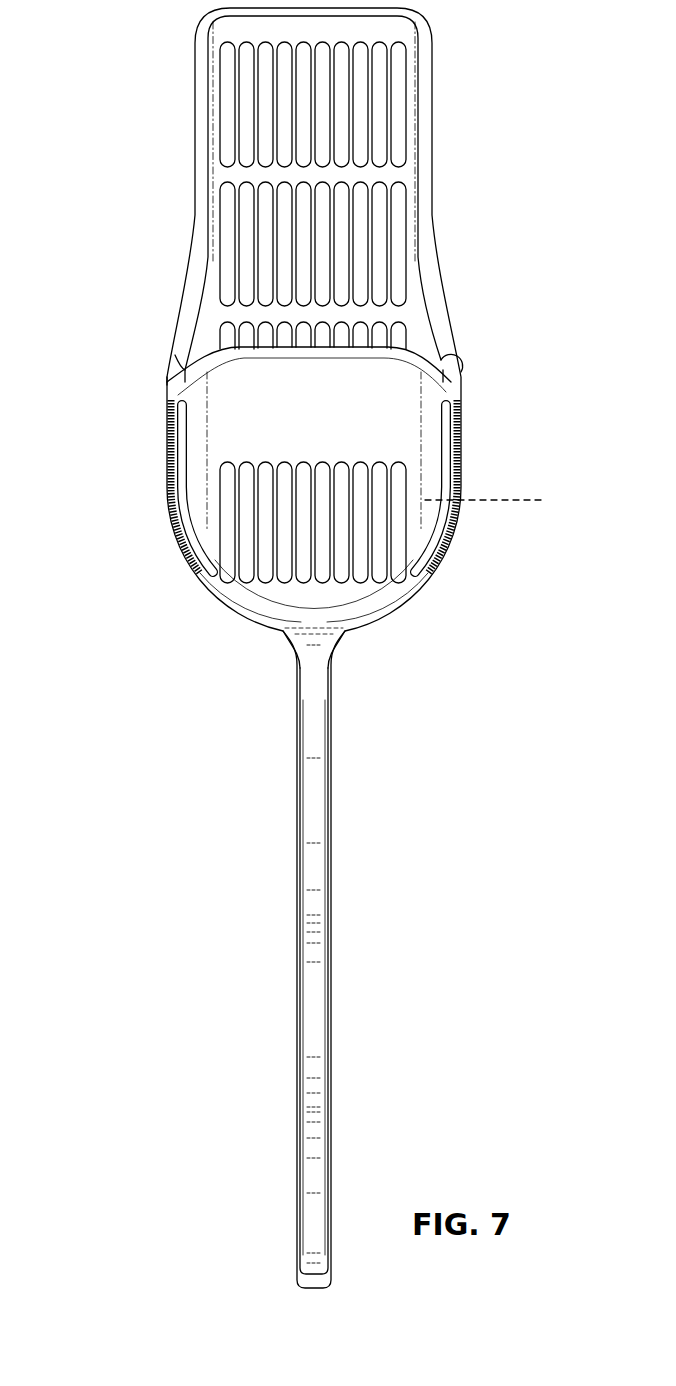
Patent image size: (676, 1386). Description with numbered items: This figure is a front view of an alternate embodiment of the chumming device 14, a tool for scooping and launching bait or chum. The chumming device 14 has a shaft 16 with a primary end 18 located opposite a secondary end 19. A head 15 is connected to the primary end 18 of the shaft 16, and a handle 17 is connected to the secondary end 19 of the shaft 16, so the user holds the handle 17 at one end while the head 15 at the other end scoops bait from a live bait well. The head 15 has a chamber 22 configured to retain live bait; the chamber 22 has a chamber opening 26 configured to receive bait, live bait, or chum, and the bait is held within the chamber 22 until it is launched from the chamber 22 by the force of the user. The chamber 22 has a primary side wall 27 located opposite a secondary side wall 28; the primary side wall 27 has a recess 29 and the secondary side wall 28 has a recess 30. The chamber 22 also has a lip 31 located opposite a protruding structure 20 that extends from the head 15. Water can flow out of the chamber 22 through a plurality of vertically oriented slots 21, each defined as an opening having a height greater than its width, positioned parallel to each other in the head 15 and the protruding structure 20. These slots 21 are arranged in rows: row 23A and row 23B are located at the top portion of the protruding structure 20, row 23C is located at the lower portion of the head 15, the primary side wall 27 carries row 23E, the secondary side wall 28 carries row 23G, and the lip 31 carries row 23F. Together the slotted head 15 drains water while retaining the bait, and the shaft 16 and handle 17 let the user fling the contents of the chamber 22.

The chumming device 14 is at (270, 648).
The head 15 is at (328, 328).
The shaft 16 is at (322, 952).
The handle 17 is at (322, 1177).
The primary end 18 is at (331, 672).
The secondary end 19 is at (316, 1093).
The protruding structure 20 is at (420, 118).
The vertically oriented slots 21 is at (222, 118).
The chamber 22 is at (496, 502).
The row of vertically oriented slots 23A is at (400, 92).
The row of vertically oriented slots 23B is at (401, 228).
The row of vertically oriented slots 23C is at (407, 334).
The row of vertically oriented slots 23E is at (167, 510).
The row of vertically oriented slots 23F is at (400, 553).
The row of vertically oriented slots 23G is at (457, 540).
The chamber opening 26 is at (455, 362).
The primary side wall 27 is at (168, 432).
The secondary side wall 28 is at (455, 413).
The recess 29 is at (175, 358).
The recess 30 is at (445, 345).
The lip 31 is at (287, 387).